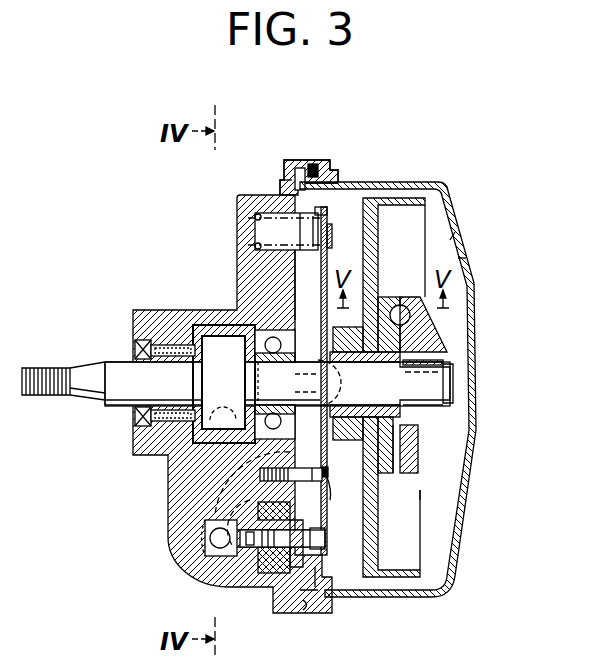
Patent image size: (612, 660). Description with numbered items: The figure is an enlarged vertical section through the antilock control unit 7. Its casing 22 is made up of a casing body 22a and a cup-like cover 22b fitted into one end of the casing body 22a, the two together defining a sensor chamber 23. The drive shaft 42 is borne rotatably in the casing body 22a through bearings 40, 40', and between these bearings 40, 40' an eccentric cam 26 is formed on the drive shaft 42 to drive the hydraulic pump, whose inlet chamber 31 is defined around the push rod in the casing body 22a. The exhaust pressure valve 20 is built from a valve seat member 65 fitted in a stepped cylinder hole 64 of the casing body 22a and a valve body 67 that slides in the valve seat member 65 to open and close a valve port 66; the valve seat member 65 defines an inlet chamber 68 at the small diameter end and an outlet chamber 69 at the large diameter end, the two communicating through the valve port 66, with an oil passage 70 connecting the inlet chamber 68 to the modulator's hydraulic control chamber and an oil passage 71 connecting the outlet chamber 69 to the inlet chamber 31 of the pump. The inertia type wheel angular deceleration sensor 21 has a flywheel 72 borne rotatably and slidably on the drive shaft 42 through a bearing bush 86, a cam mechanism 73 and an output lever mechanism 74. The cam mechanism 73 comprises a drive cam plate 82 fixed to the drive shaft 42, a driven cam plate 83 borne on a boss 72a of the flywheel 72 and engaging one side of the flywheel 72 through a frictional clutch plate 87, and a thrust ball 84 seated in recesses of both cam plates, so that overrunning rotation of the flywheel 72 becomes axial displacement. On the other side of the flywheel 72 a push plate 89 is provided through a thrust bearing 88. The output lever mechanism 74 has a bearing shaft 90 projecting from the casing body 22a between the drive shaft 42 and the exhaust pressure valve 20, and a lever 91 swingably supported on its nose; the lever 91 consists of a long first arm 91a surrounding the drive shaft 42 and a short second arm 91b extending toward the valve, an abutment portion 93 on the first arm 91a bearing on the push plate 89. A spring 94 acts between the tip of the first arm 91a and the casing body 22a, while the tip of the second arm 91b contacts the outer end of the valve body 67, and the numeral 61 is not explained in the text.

The antilock control unit 7 is at (428, 170).
The exhaust pressure valve 20 is at (222, 578).
The inertia type wheel angular deceleration sensor 21 is at (440, 242).
The casing 22 is at (375, 125).
The casing body 22a is at (267, 195).
The cup-like cover 22b is at (355, 183).
The sensor chamber 23 is at (450, 259).
The eccentric cam 26 is at (228, 335).
The inlet chamber 31 is at (223, 382).
The bearing 40 is at (279, 384).
The bearing 40' is at (268, 383).
The drive shaft 42 is at (117, 362).
The pin 61 is at (260, 476).
The stepped cylinder hole 64 is at (237, 542).
The valve seat member 65 is at (298, 587).
The valve port 66 is at (262, 547).
The valve body 67 is at (290, 548).
The inlet chamber 68 is at (210, 528).
The outlet chamber 69 is at (255, 548).
The oil passage 70 is at (218, 540).
The oil passage 71 is at (242, 470).
The flywheel 72 is at (378, 247).
The boss 72a is at (418, 464).
The cam mechanism 73 is at (404, 290).
The output lever mechanism 74 is at (334, 232).
The drive cam plate 82 is at (418, 468).
The driven cam plate 83 is at (397, 473).
The thrust ball 84 is at (422, 314).
The bearing bush 86 is at (405, 388).
The frictional clutch plate 87 is at (397, 462).
The thrust bearing 88 is at (365, 383).
The push plate 89 is at (345, 477).
The bearing shaft 90 is at (320, 484).
The lever 91 is at (344, 381).
The first arm 91a is at (308, 270).
The second arm 91b is at (330, 582).
The abutment portion 93 is at (314, 383).
The spring 94 is at (256, 218).